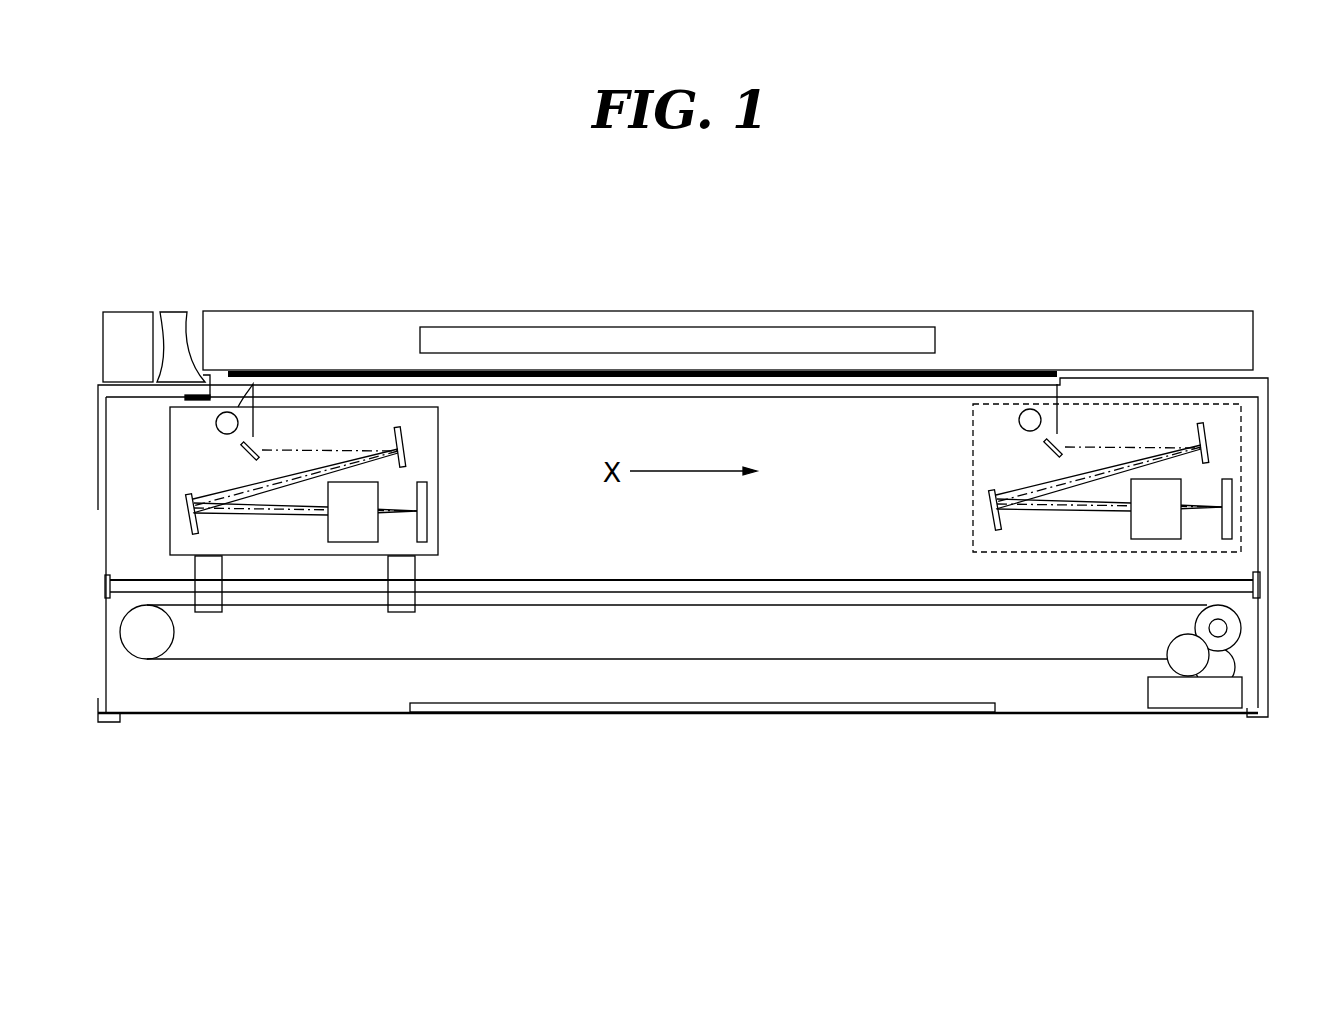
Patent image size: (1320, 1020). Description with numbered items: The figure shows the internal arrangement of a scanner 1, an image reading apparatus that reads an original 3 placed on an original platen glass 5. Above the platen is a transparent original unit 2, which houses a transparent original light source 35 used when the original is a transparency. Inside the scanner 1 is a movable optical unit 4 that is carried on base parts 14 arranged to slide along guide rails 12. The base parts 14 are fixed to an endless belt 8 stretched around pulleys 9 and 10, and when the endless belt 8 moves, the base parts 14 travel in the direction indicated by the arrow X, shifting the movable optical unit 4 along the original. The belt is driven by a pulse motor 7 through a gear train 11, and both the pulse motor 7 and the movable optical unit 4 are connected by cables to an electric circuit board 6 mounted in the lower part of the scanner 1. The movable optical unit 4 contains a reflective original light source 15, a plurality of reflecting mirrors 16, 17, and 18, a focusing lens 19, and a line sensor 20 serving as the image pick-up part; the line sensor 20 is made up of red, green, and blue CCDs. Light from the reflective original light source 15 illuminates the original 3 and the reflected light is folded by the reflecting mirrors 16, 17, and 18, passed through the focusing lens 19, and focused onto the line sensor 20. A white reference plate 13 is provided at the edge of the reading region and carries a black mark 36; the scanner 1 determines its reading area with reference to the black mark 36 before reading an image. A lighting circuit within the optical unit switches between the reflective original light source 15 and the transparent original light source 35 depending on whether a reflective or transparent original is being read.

The scanner 1 is at (208, 713).
The transparent original unit 2 is at (1040, 333).
The original 3 is at (398, 371).
The movable optical unit 4 is at (322, 420).
The original platen glass 5 is at (953, 386).
The electric circuit board 6 is at (637, 712).
The pulse motor 7 is at (1190, 700).
The endless belt 8 is at (308, 662).
The pulley 9 is at (1238, 630).
The pulley 10 is at (138, 638).
The gear train 11 is at (1167, 660).
The guide rails 12 is at (827, 585).
The white reference plate 13 is at (222, 385).
The base parts 14 is at (205, 570).
The reflective original light source 15 is at (218, 423).
The reflecting mirror 16 is at (244, 456).
The reflecting mirror 17 is at (403, 452).
The reflecting mirror 18 is at (190, 520).
The focusing lens 19 is at (372, 543).
The line sensor 20 is at (427, 498).
The transparent original light source 35 is at (617, 333).
The black mark 36 is at (205, 375).